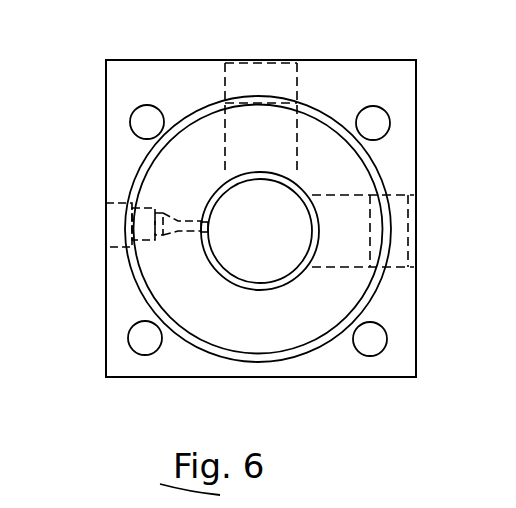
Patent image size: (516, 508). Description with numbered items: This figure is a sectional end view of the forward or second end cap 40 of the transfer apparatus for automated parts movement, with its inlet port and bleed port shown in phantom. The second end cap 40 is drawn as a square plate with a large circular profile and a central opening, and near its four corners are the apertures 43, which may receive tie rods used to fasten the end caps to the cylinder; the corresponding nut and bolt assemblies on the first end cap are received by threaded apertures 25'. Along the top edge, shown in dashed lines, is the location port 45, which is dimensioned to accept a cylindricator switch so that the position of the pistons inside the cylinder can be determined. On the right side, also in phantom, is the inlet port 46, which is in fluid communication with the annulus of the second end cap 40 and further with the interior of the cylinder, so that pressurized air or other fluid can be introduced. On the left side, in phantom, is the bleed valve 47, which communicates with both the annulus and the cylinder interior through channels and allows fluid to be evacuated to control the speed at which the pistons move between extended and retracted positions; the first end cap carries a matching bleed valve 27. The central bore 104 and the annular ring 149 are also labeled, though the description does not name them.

The second end cap 40 is at (157, 70).
The apertures 43 is at (140, 125).
The location port 45 is at (259, 80).
The inlet port 46 is at (405, 228).
The bleed valve 47 is at (115, 233).
The central bore 104 is at (320, 146).
The annular ring 149 is at (352, 170).
The threaded apertures 25' is at (485, 325).
The bleed valve 27 is at (514, 477).